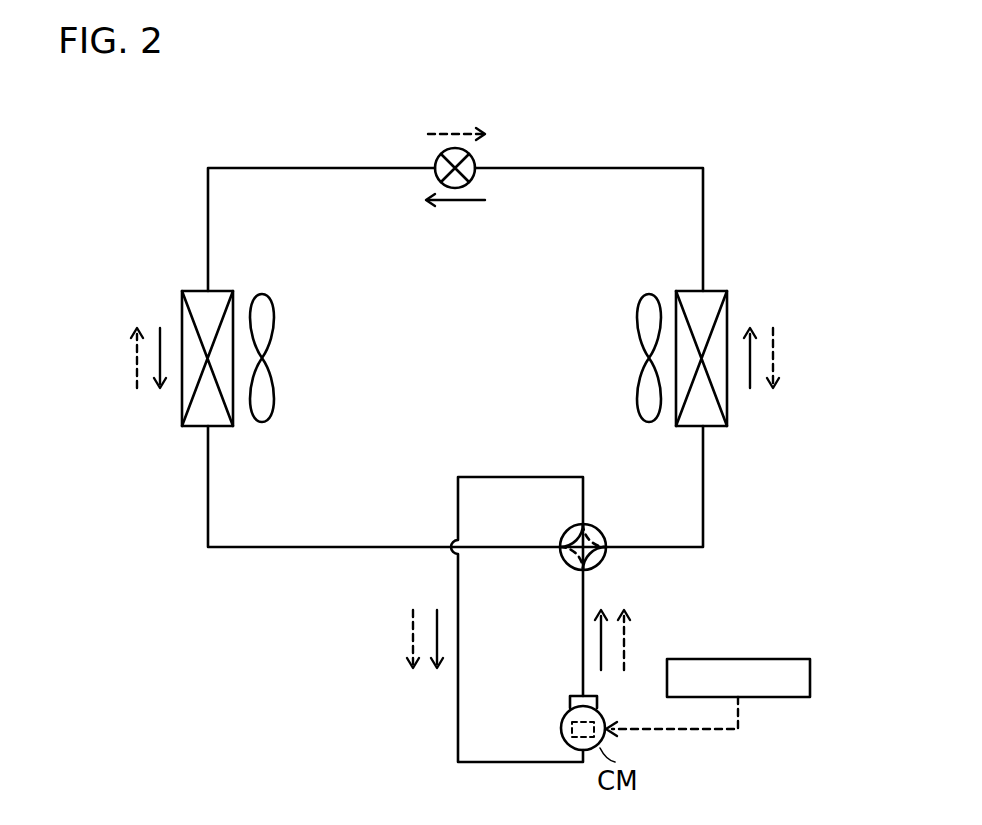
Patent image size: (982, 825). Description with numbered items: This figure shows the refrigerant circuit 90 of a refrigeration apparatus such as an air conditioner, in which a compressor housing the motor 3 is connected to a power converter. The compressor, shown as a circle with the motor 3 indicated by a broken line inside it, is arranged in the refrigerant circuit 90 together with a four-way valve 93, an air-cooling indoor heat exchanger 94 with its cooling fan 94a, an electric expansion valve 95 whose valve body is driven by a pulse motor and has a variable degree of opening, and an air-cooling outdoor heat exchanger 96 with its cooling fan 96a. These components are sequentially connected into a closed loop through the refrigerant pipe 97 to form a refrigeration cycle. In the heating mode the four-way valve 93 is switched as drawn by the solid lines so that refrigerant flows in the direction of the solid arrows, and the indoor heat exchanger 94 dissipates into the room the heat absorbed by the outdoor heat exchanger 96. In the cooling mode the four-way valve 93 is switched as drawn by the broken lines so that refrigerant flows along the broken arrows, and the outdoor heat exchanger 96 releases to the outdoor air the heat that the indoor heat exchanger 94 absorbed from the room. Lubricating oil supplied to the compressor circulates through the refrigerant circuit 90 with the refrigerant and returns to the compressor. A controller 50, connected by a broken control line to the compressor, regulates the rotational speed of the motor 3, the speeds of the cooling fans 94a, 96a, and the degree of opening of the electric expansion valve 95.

The refrigerant circuit 90 is at (616, 142).
The refrigerant pipe 97 is at (296, 167).
The electric expansion valve 95 is at (434, 160).
The outdoor heat exchanger 96 is at (195, 290).
The cooling fan 96a is at (276, 320).
The indoor heat exchanger 94 is at (721, 290).
The cooling fan 94a is at (637, 322).
The four-way valve 93 is at (602, 530).
The motor 3 is at (590, 735).
The controller 50 is at (812, 676).